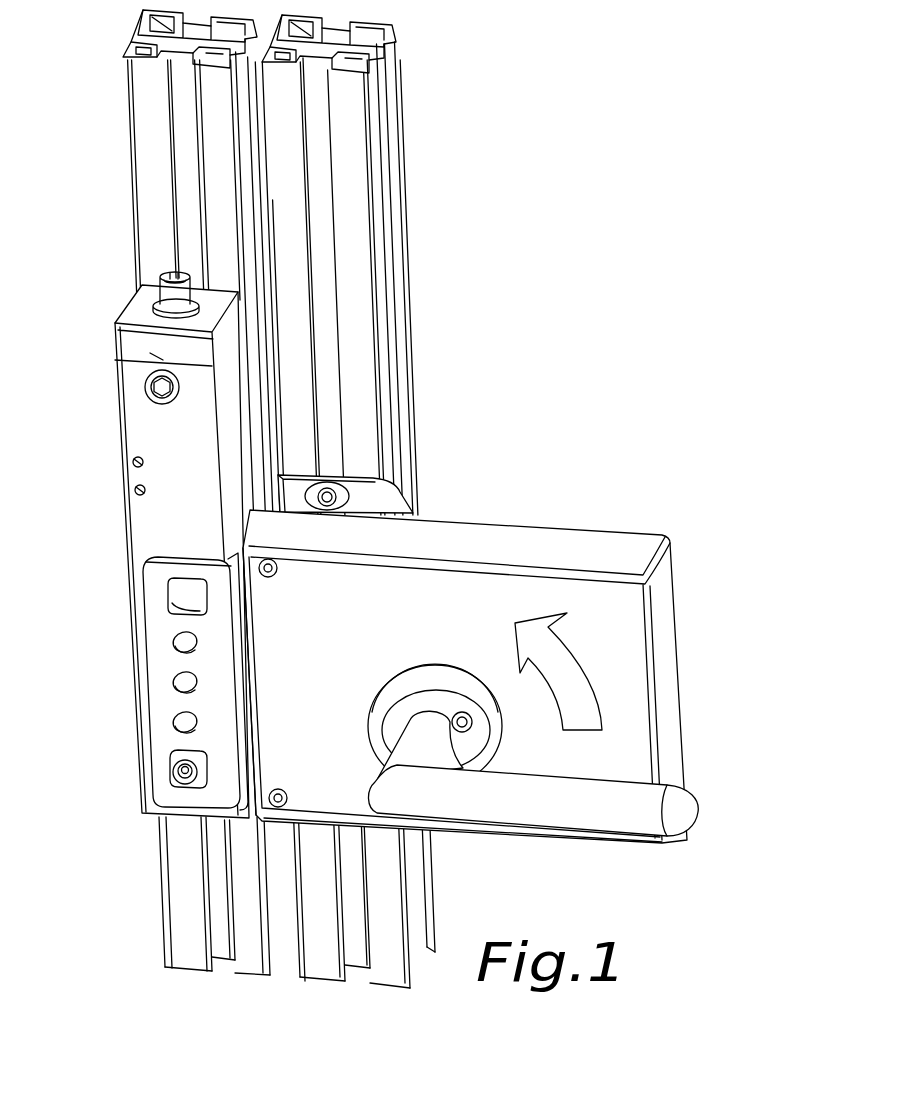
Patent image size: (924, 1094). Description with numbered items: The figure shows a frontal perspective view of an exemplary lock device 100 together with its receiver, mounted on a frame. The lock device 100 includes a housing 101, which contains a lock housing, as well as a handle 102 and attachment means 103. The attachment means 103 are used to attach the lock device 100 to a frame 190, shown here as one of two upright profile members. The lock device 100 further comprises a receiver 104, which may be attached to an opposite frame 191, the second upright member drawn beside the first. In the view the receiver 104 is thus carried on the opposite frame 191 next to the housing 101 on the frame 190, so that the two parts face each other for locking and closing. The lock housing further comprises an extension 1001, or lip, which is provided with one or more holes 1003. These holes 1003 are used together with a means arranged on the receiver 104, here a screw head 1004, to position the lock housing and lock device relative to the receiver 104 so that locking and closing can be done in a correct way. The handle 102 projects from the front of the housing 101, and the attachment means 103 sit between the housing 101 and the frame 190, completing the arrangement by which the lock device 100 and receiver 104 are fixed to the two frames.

The lock device 100 is at (633, 507).
The housing 101 is at (667, 645).
The handle 102 is at (627, 797).
The attachment means 103 is at (377, 502).
The receiver 104 is at (143, 430).
The frame 190 is at (348, 253).
The opposite frame 191 is at (153, 208).
The extension 1001 is at (182, 598).
The holes 1003 is at (163, 662).
The screw head 1004 is at (172, 773).